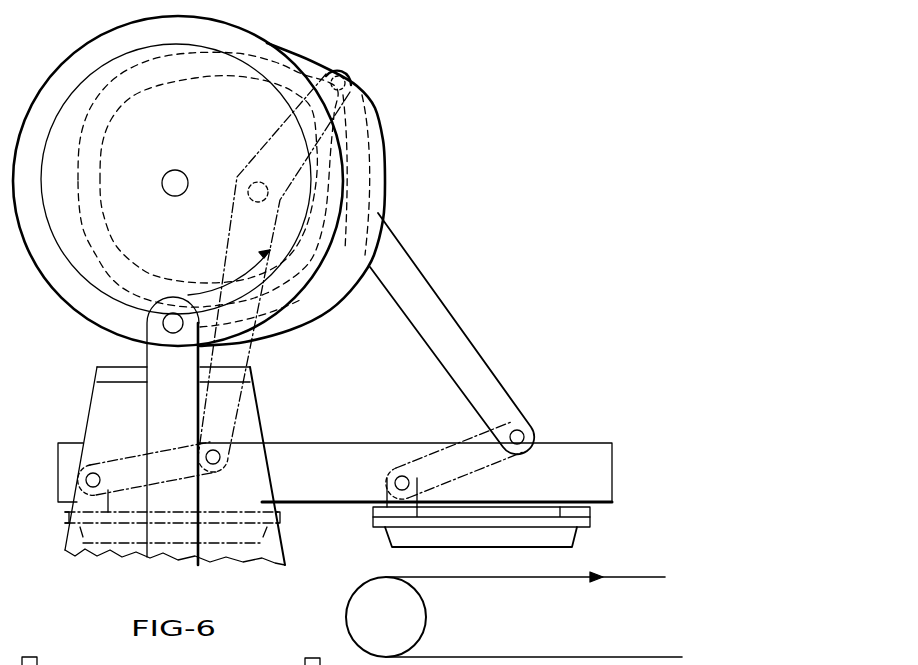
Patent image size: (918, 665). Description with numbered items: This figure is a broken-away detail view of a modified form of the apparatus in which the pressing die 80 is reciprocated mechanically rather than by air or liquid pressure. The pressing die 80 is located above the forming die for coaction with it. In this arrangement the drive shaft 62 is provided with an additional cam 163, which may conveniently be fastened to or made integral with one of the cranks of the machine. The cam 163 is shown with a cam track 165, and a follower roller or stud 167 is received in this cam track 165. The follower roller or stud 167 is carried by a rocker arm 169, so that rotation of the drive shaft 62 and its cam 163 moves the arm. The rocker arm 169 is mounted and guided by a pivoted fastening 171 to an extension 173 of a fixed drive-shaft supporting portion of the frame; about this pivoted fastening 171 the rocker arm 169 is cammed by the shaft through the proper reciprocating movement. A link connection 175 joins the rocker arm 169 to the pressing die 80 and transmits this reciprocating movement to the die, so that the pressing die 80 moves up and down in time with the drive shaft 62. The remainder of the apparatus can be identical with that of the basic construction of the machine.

The drive shaft 62 is at (173, 196).
The pressing die 80 is at (570, 542).
The cam 163 is at (377, 157).
The cam track 165 is at (187, 83).
The follower roller or stud 167 is at (352, 224).
The rocker arm 169 is at (430, 293).
The pivoted fastening 171 is at (352, 78).
The extension 173 is at (330, 75).
The link connection 175 is at (478, 439).